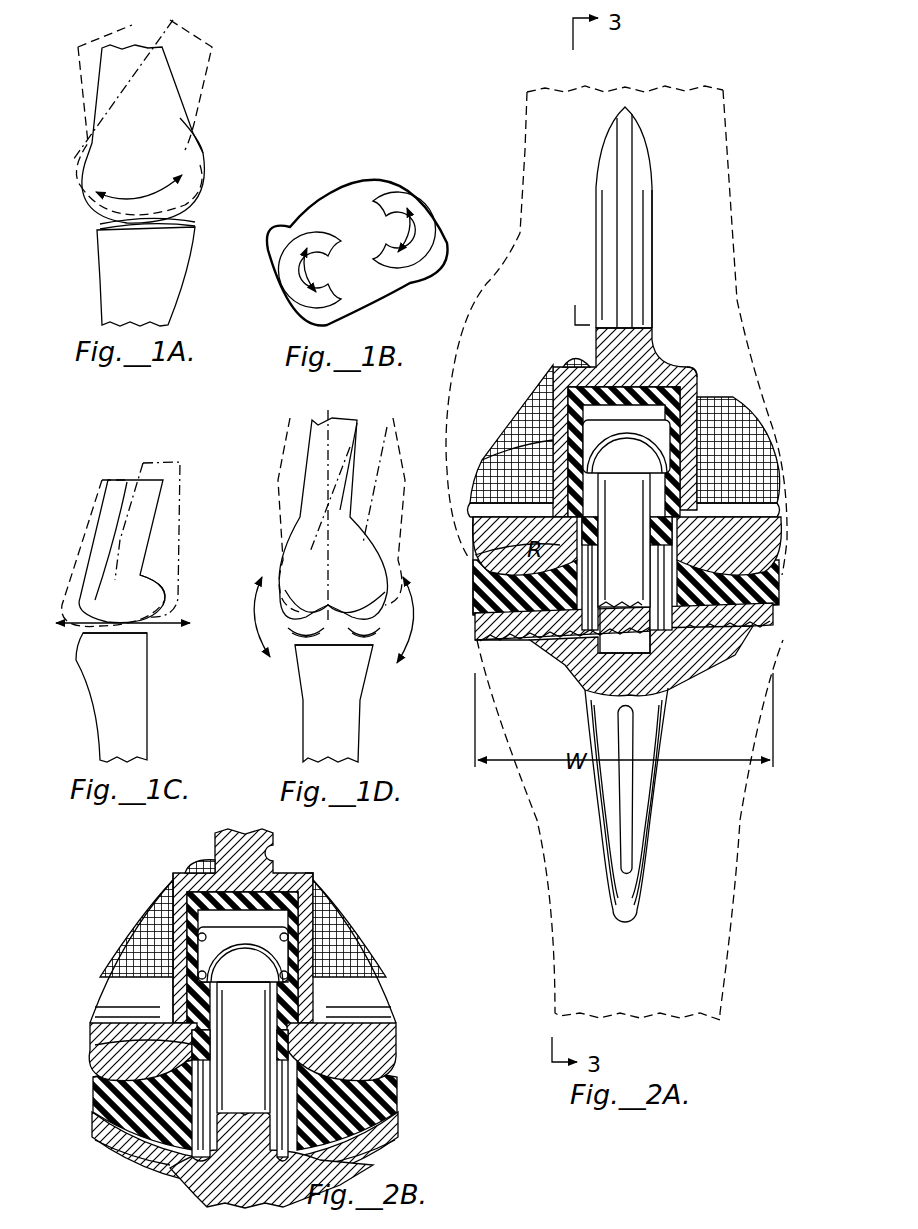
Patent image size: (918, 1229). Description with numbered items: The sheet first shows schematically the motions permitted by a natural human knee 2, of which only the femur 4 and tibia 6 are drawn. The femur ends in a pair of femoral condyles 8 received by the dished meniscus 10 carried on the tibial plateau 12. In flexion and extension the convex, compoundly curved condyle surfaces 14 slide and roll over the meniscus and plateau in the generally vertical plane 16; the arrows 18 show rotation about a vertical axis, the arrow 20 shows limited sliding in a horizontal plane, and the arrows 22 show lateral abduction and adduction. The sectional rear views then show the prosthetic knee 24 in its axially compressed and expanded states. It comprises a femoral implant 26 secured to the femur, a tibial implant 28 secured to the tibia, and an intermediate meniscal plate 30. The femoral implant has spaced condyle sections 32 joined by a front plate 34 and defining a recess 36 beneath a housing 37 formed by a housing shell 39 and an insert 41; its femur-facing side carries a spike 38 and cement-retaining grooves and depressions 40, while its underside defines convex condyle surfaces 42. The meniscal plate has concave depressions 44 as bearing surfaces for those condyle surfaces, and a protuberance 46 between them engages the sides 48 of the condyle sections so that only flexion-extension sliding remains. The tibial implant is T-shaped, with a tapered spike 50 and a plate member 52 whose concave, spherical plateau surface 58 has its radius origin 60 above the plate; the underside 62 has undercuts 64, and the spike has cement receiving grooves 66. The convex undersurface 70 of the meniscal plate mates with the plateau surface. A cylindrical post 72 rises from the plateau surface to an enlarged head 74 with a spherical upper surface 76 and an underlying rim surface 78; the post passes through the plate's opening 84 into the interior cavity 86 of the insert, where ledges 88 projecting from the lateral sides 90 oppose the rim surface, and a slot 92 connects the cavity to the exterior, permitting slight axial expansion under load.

In FIG. 1A, the natural human knee 2 is at (241, 163).
In FIG. 2A, the natural human knee 2 is at (758, 346).
In FIG. 1A, the femur 4 is at (165, 66).
In FIG. 1C, the femur 4 is at (155, 506).
In FIG. 1D, the femur 4 is at (305, 470).
In FIG. 2A, the femur 4 is at (525, 147).
In FIG. 1A, the tibia 6 is at (108, 279).
In FIG. 1C, the tibia 6 is at (145, 752).
In FIG. 1D, the tibia 6 is at (355, 745).
In FIG. 2A, the tibia 6 is at (735, 958).
In FIG. 1A, the femoral condyles 8 is at (200, 148).
In FIG. 1C, the femoral condyles 8 is at (160, 592).
In FIG. 1D, the femoral condyles 8 is at (380, 606).
In FIG. 1A, the meniscus 10 is at (187, 217).
In FIG. 1B, the meniscus 10 is at (300, 300).
In FIG. 1D, the meniscus 10 is at (290, 640).
In FIG. 1A, the tibial plateau 12 is at (194, 236).
In FIG. 1B, the tibial plateau 12 is at (360, 305).
In FIG. 1C, the tibial plateau 12 is at (140, 656).
In FIG. 1D, the tibial plateau 12 is at (360, 665).
In FIG. 1A, the condyle surfaces 14 is at (92, 203).
In FIG. 1A, the flexion-extension plane 16 is at (156, 90).
In FIG. 1D, the flexion-extension plane 16 is at (322, 545).
In FIG. 1B, the arrows 18 is at (302, 276).
In FIG. 1C, the arrow 20 is at (168, 628).
In FIG. 1D, the arrows 22 is at (420, 592).
In FIG. 2A, the arrows 22 is at (465, 585).
In FIG. 2A, the prosthetic knee 24 is at (648, 128).
In FIG. 2A, the femoral implant 26 is at (750, 430).
In FIG. 2B, the femoral implant 26 is at (276, 855).
In FIG. 2A, the tibial implant 28 is at (672, 695).
In FIG. 2B, the tibial implant 28 is at (193, 1192).
In FIG. 2A, the meniscal plate 30 is at (454, 579).
In FIG. 2B, the meniscal plate 30 is at (385, 1100).
In FIG. 2A, the condyle sections 32 is at (772, 542).
In FIG. 2A, the front plate 34 is at (532, 428).
In FIG. 2A, the recess 36 is at (780, 502).
In FIG. 2B, the recess 36 is at (243, 1012).
In FIG. 2A, the housing 37 is at (703, 365).
In FIG. 2B, the housing 37 is at (318, 876).
In FIG. 2A, the spike 38 is at (653, 245).
In FIG. 2A, the housing shell 39 is at (683, 396).
In FIG. 2B, the housing shell 39 is at (185, 896).
In FIG. 2A, the grooves and depressions 40 is at (520, 450).
In FIG. 2A, the insert 41 is at (583, 393).
In FIG. 2B, the insert 41 is at (197, 910).
In FIG. 2A, the condyle surfaces 42 is at (770, 588).
In FIG. 2B, the condyle surfaces 42 is at (385, 1062).
In FIG. 2A, the depressions 44 is at (774, 566).
In FIG. 2B, the depressions 44 is at (100, 1090).
In FIG. 2A, the protuberance 46 is at (575, 535).
In FIG. 2B, the protuberance 46 is at (95, 1045).
In FIG. 2A, the sides 48 is at (627, 573).
In FIG. 2B, the sides 48 is at (277, 1045).
In FIG. 2A, the spike 50 is at (657, 835).
In FIG. 2A, the plate member 52 is at (722, 638).
In FIG. 2A, the plateau surface 58 is at (530, 642).
In FIG. 2B, the plateau surface 58 is at (150, 1160).
In FIG. 2A, the origin 60 is at (650, 343).
In FIG. 2A, the underside 62 is at (565, 678).
In FIG. 2A, the undercuts 64 is at (700, 652).
In FIG. 2A, the cement receiving grooves 66 is at (608, 237).
In FIG. 2A, the undersurface 70 is at (775, 622).
In FIG. 2B, the undersurface 70 is at (112, 1140).
In FIG. 2A, the cylindrical post 72 is at (624, 540).
In FIG. 2B, the cylindrical post 72 is at (243, 1047).
In FIG. 2A, the head 74 is at (626, 446).
In FIG. 2B, the head 74 is at (290, 960).
In FIG. 2A, the upper surface 76 is at (627, 453).
In FIG. 2B, the upper surface 76 is at (245, 963).
In FIG. 2B, the rim surface 78 is at (225, 985).
In FIG. 2B, the opening 84 is at (300, 1150).
In FIG. 2B, the interior cavity 86 is at (214, 868).
In FIG. 2B, the ledges 88 is at (200, 978).
In FIG. 2B, the lateral sides 90 is at (298, 935).
In FIG. 2B, the slot 92 is at (277, 1022).